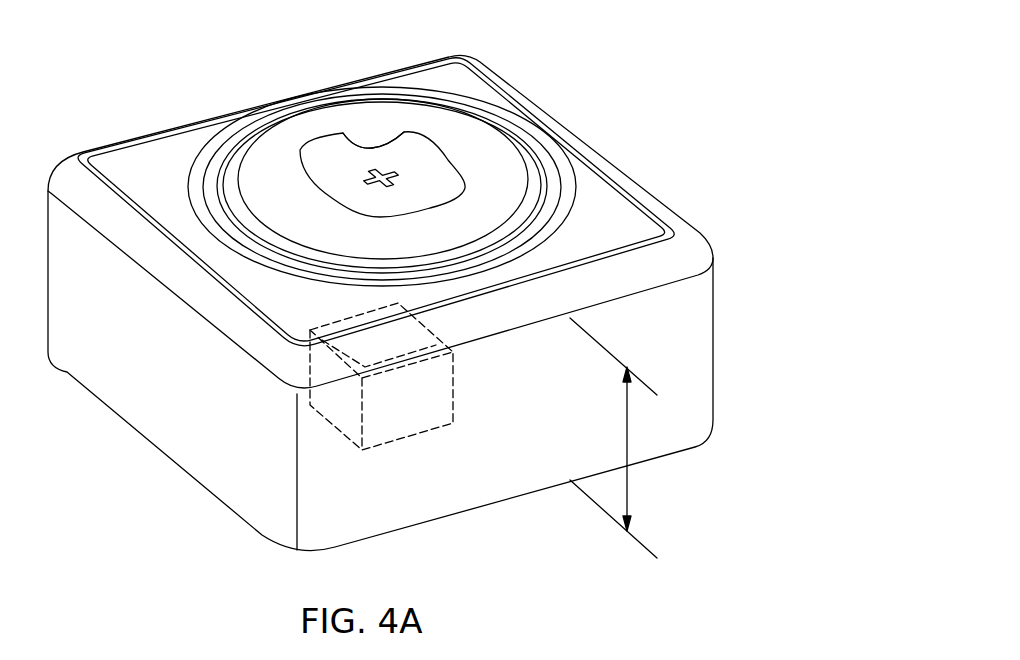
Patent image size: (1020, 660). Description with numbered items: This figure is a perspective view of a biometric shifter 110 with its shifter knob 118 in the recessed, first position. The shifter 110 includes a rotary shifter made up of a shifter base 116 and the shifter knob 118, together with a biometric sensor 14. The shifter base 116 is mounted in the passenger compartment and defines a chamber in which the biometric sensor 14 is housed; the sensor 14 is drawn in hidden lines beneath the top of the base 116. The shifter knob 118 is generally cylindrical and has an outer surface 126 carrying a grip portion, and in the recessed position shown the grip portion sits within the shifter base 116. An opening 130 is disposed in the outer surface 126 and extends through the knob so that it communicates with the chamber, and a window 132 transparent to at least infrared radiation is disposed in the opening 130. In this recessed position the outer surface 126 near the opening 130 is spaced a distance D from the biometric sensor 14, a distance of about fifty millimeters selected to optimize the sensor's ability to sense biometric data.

The biometric shifter 110 is at (436, 282).
The shifter base 116 is at (700, 318).
The shifter knob 118 is at (531, 174).
The outer surface 126 is at (273, 140).
The opening 130 is at (404, 133).
The window 132 is at (321, 157).
The biometric sensor 14 is at (400, 423).
The distance D is at (628, 488).